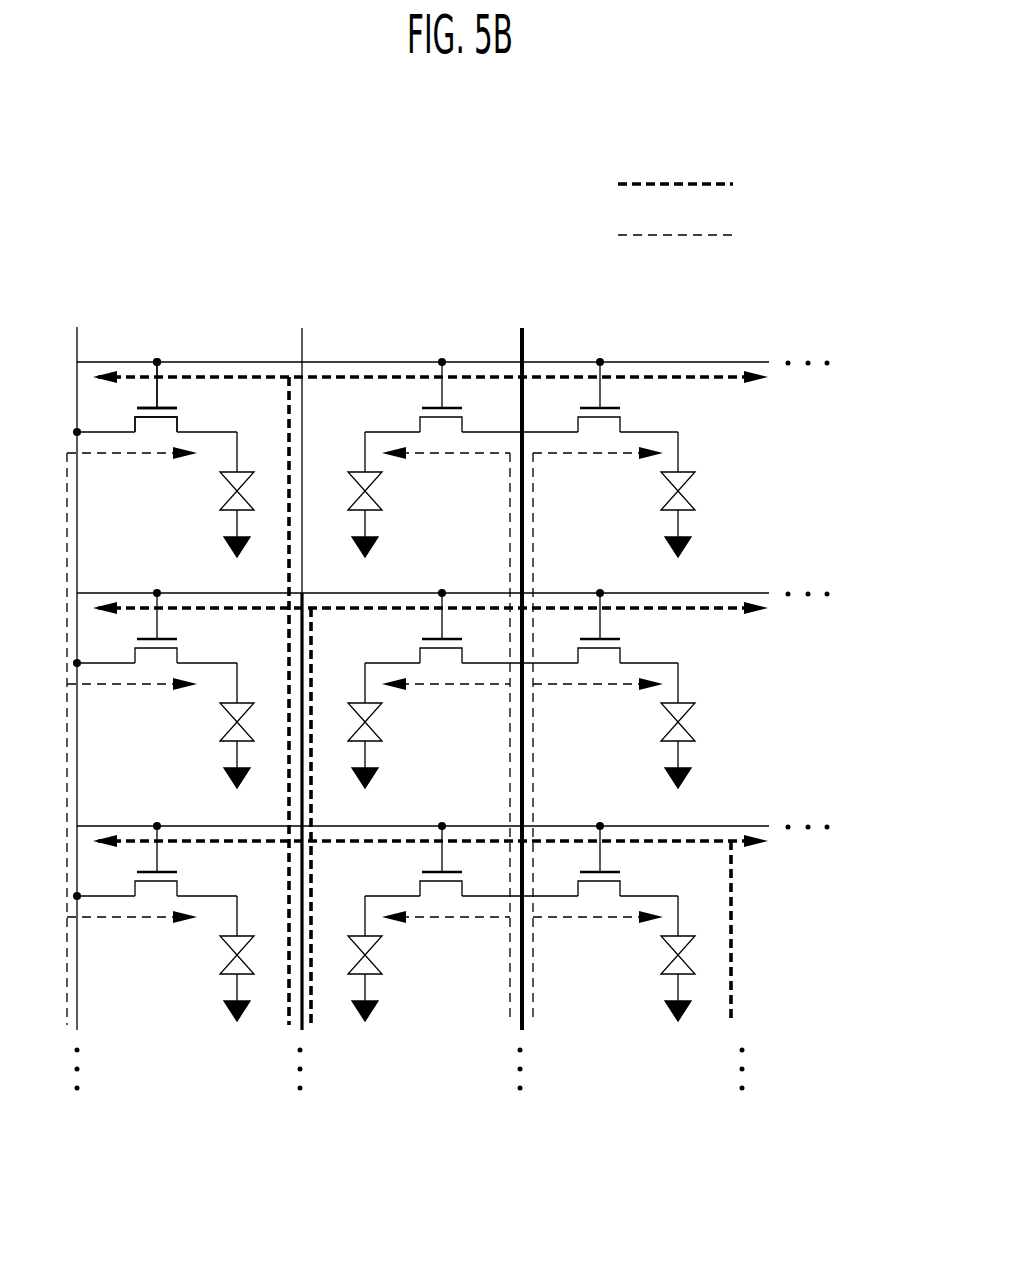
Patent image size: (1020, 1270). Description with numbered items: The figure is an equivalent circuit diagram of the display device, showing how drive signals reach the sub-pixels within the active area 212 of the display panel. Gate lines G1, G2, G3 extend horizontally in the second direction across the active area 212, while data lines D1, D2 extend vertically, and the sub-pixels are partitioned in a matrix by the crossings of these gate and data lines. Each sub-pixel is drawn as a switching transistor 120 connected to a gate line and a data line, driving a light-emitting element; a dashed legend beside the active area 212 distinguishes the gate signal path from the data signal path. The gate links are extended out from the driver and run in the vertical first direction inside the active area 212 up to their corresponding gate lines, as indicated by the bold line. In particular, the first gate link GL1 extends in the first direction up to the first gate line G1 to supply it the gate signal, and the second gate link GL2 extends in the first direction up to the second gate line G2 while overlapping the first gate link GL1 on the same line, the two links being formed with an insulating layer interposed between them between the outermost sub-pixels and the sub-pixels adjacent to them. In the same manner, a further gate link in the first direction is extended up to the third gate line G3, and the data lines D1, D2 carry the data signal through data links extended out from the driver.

The active area 212 is at (683, 133).
The transistor 120 is at (183, 413).
The first data line D1 is at (77, 330).
The first gate link GL1 is at (302, 330).
The second gate link GL2 is at (303, 668).
The second data line D2 is at (545, 315).
The first gate line G1 is at (760, 362).
The second gate line G2 is at (760, 593).
The third gate line G3 is at (760, 826).